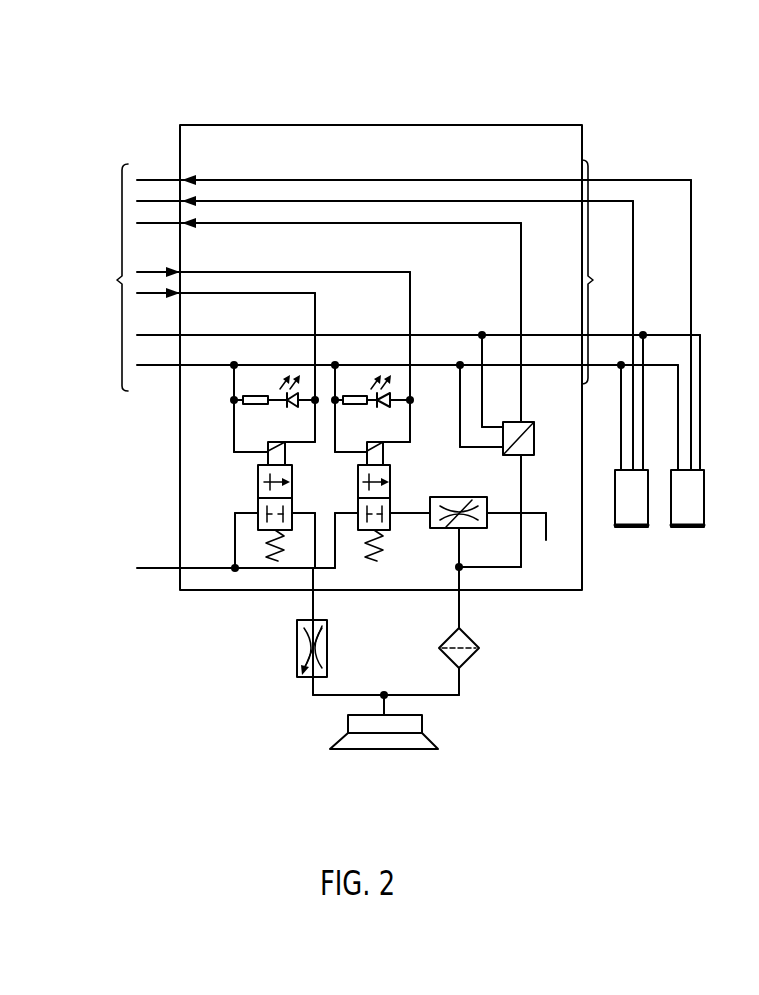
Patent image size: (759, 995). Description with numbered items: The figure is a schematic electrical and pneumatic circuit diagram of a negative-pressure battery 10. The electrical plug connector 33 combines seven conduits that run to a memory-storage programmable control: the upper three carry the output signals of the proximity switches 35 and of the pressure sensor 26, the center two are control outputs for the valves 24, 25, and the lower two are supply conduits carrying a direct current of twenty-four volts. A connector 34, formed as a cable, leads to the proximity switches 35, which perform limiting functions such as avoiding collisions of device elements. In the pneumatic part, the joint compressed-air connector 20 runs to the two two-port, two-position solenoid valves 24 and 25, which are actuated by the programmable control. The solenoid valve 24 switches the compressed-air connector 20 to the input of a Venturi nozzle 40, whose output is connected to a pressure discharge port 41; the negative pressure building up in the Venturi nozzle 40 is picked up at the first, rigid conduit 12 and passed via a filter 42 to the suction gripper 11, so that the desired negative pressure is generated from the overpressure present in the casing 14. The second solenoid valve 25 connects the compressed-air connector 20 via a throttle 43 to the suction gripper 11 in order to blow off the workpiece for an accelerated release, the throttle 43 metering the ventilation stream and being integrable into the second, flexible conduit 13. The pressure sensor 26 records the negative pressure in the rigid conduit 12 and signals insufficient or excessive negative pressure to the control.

The negative-pressure battery 10 is at (514, 104).
The suction gripper 11 is at (400, 740).
The first, rigid conduit 12 is at (464, 612).
The second, flexible conduit 13 is at (313, 603).
The casing 14 is at (306, 125).
The joint compressed-air connector 20 is at (146, 571).
The solenoid valve 24 is at (384, 470).
The second solenoid valve 25 is at (258, 472).
The pressure sensor 26 is at (530, 455).
The electrical plug connector 33 is at (382, 277).
The connector 34 is at (641, 315).
The proximity switches 35 is at (688, 517).
The Venturi nozzle 40 is at (458, 497).
The pressure discharge port 41 is at (550, 547).
The filter 42 is at (468, 660).
The throttle 43 is at (297, 670).